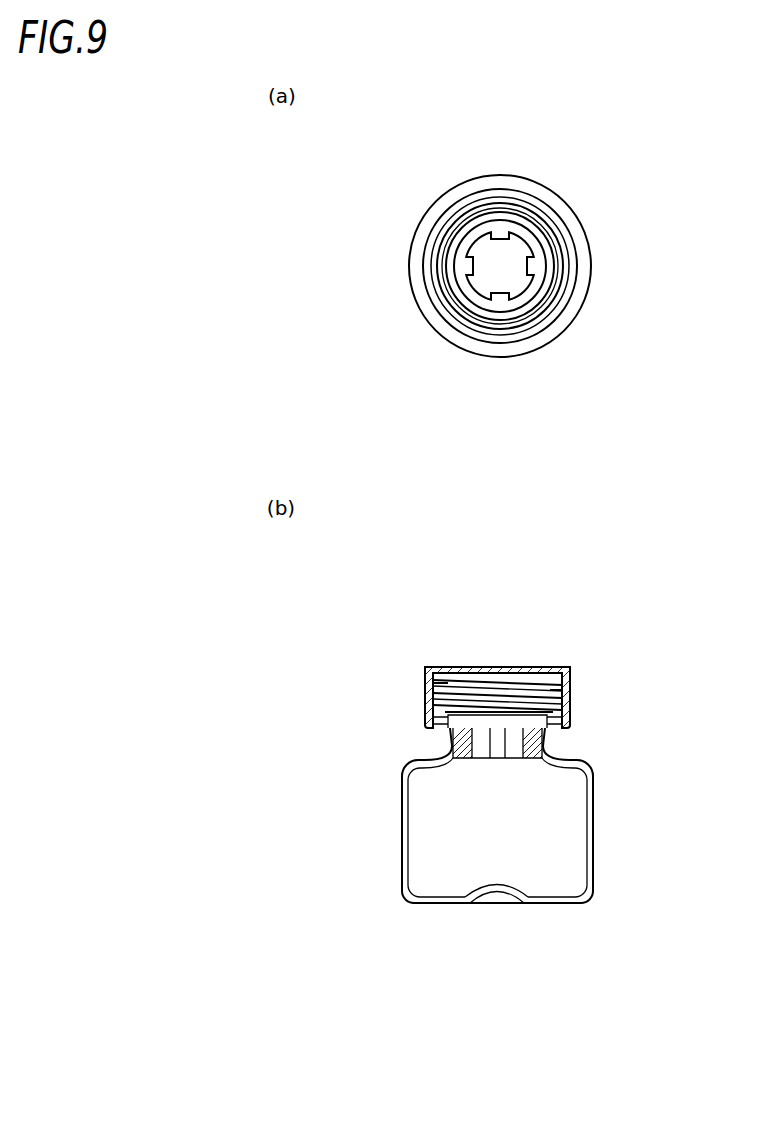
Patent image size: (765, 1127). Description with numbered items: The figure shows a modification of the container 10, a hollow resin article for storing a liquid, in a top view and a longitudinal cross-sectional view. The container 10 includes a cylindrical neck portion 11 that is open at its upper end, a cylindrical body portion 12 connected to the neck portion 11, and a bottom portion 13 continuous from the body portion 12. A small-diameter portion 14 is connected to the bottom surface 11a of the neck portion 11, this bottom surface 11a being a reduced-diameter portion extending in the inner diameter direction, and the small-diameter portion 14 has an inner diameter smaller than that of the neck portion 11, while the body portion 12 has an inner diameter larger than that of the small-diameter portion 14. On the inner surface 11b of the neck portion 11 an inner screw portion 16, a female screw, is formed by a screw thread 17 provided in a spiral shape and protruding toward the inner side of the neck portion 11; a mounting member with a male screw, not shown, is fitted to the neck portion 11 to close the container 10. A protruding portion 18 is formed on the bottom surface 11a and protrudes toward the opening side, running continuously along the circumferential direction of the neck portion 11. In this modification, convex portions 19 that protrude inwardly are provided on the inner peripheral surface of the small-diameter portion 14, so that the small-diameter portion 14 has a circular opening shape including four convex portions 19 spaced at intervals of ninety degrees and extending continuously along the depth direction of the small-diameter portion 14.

The container 10 is at (626, 166).
The neck portion 11 is at (571, 249).
The bottom surface of the neck portion 11a is at (452, 716).
The inner surface of the neck portion 11b is at (559, 688).
The body portion 12 is at (565, 312).
The bottom portion 13 is at (453, 901).
The small-diameter portion 14 is at (520, 244).
The inner screw portion 16 is at (524, 675).
The screw thread 17 is at (448, 684).
The protruding portion 18 is at (430, 720).
The convex portions 19 is at (489, 241).